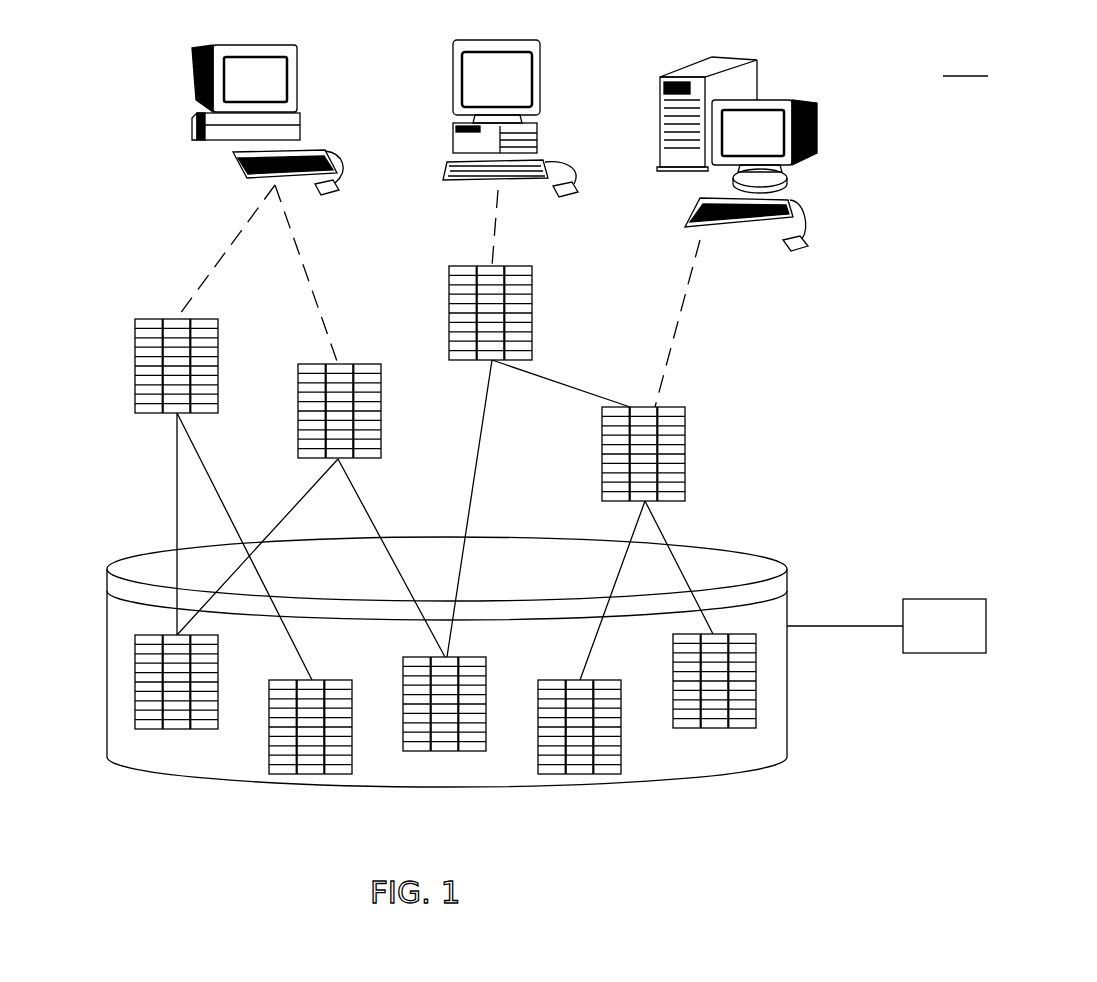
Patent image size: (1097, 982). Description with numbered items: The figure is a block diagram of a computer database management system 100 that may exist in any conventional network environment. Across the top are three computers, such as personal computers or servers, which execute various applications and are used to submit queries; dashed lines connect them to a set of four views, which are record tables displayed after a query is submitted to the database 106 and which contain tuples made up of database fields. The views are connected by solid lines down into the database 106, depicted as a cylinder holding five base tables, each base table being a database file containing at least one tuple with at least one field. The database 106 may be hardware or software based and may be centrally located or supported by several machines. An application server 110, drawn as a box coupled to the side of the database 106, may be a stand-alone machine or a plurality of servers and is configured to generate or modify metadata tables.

The computer database management system 100 is at (965, 64).
The database 106 is at (787, 752).
The application server 110 is at (986, 612).